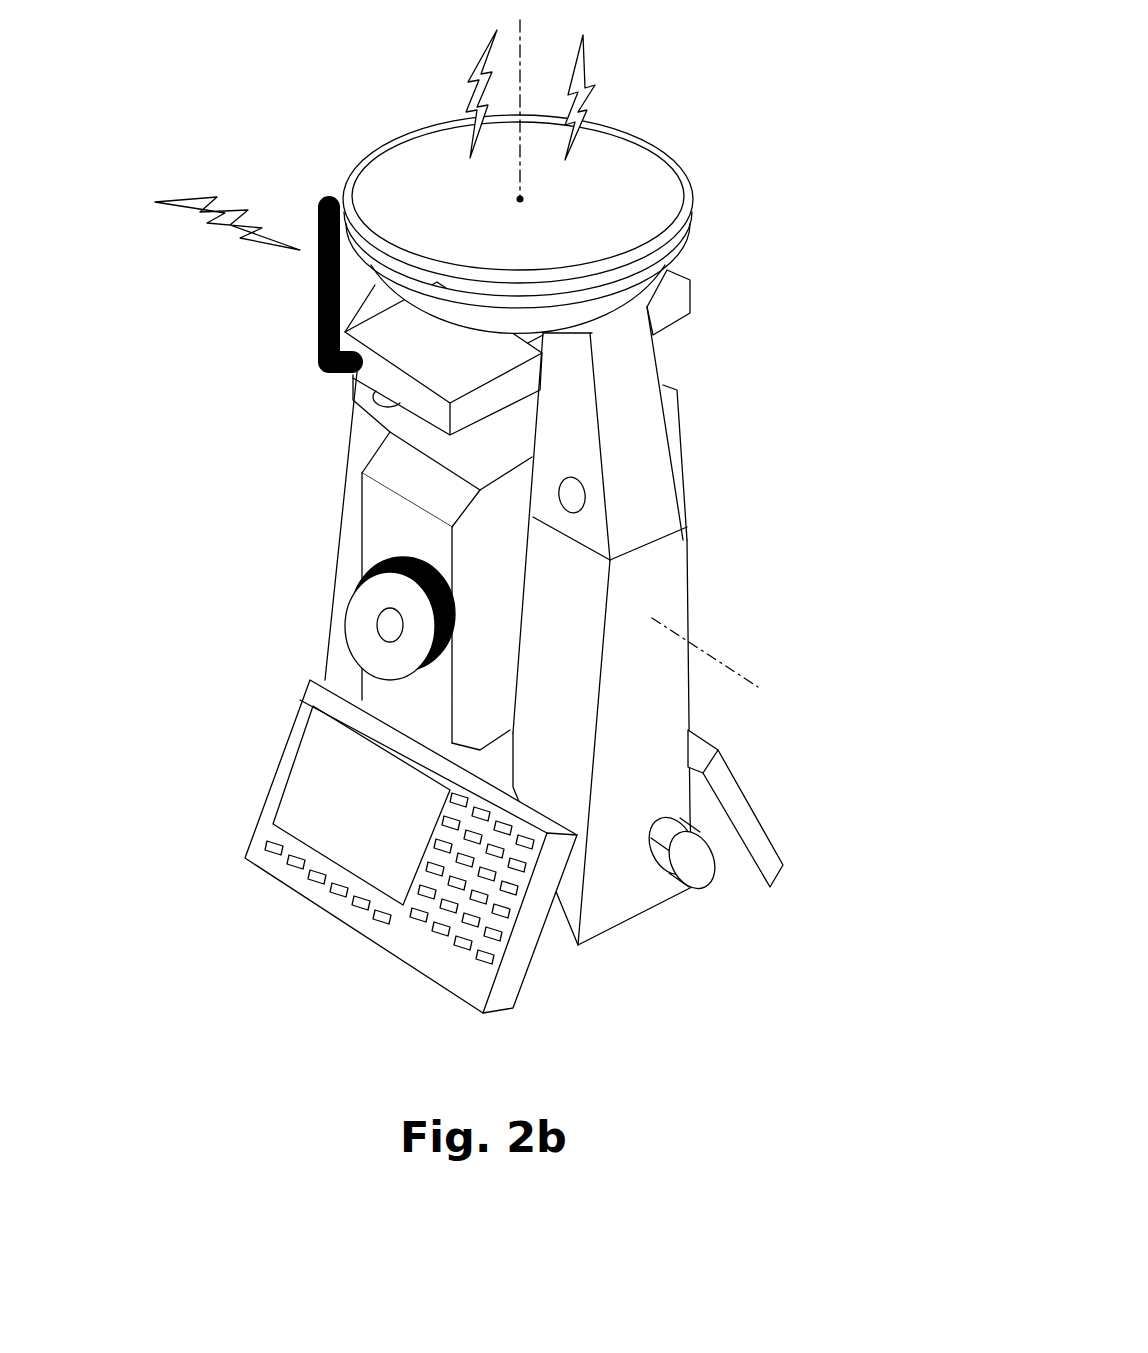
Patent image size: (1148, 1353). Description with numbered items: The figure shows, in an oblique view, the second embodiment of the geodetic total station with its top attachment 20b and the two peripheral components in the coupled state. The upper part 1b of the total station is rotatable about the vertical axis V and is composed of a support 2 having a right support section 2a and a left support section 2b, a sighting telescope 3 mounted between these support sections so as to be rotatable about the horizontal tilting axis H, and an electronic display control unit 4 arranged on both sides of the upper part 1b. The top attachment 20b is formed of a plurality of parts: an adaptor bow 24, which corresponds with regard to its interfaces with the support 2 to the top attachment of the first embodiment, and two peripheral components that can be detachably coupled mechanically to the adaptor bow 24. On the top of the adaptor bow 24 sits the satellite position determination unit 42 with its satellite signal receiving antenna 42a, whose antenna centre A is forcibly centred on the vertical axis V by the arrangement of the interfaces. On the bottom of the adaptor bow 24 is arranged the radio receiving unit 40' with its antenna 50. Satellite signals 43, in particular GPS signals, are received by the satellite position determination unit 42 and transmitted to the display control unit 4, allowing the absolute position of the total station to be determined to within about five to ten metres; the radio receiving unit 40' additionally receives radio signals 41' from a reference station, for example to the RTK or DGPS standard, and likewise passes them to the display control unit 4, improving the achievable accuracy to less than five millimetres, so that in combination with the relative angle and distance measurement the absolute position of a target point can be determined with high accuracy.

The upper part 1b is at (763, 61).
The support 2 is at (714, 723).
The right support section 2a is at (663, 590).
The left support section 2b is at (360, 447).
The sighting telescope 3 is at (398, 528).
The electronic display control unit 4 is at (727, 785).
The top attachment 20b is at (753, 356).
The adaptor bow 24 is at (645, 485).
The radio receiving unit 40' is at (371, 358).
The radio signals 41' is at (210, 202).
The satellite position determination unit 42 is at (709, 256).
The satellite signal receiving antenna 42a is at (643, 207).
The satellite signals 43 is at (470, 80).
The antenna 50 is at (317, 271).
The antenna centre A is at (520, 199).
The vertical axis V is at (523, 40).
The horizontal tilting axis H is at (736, 671).